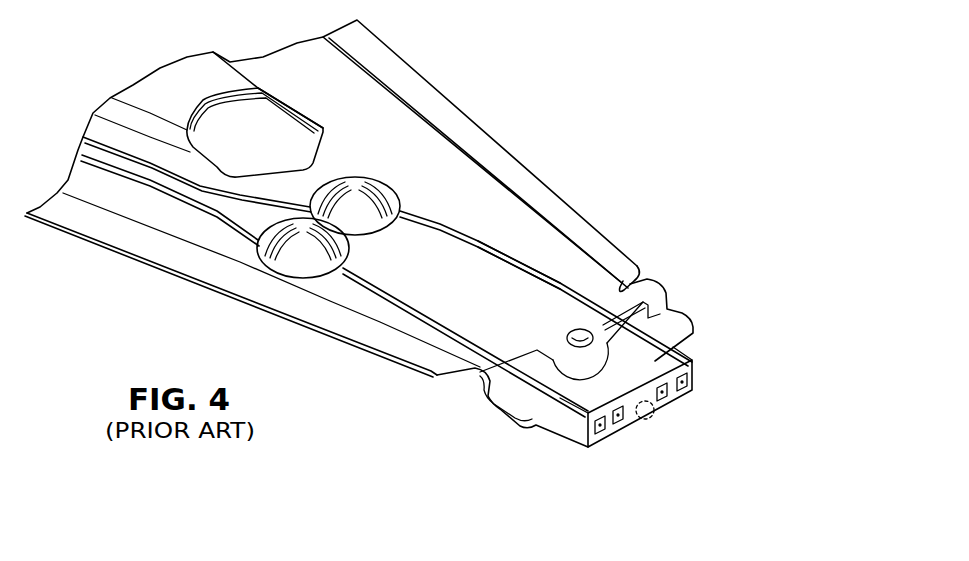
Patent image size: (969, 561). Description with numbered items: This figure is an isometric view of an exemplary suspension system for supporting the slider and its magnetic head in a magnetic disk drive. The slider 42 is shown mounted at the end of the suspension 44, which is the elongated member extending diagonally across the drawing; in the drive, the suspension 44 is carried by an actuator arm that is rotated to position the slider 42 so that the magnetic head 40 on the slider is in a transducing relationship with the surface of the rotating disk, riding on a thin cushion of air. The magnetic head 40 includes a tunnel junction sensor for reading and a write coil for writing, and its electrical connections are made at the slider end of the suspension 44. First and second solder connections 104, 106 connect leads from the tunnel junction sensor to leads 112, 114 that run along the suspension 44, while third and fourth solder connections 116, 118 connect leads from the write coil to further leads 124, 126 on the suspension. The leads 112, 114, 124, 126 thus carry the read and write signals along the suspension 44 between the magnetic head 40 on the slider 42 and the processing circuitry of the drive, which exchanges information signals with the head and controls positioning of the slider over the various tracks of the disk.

The magnetic head 40 is at (655, 422).
The slider 42 is at (540, 435).
The suspension 44 is at (498, 143).
The first solder connection 104 is at (595, 428).
The second solder connection 106 is at (690, 378).
The lead 112 is at (370, 290).
The lead 114 is at (555, 278).
The third solder connection 116 is at (617, 422).
The fourth solder connection 118 is at (667, 397).
The lead 124 is at (420, 303).
The lead 126 is at (477, 241).